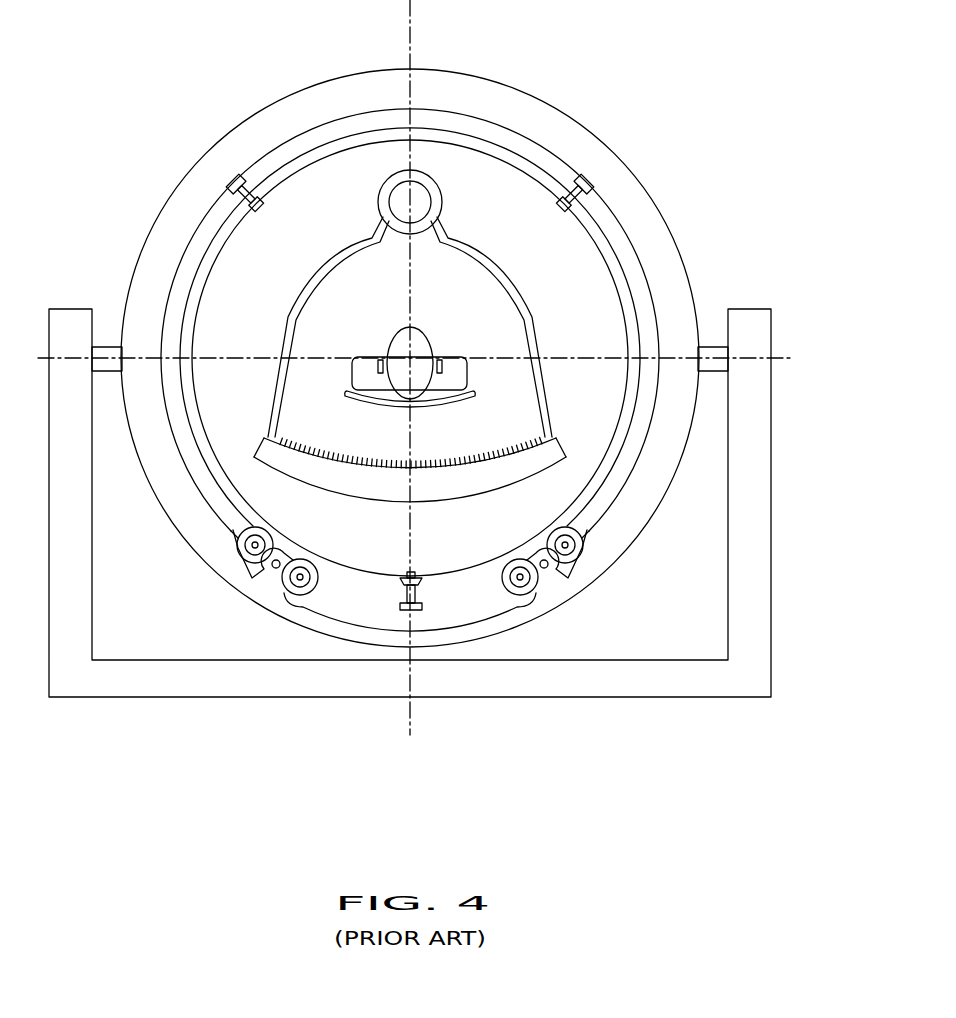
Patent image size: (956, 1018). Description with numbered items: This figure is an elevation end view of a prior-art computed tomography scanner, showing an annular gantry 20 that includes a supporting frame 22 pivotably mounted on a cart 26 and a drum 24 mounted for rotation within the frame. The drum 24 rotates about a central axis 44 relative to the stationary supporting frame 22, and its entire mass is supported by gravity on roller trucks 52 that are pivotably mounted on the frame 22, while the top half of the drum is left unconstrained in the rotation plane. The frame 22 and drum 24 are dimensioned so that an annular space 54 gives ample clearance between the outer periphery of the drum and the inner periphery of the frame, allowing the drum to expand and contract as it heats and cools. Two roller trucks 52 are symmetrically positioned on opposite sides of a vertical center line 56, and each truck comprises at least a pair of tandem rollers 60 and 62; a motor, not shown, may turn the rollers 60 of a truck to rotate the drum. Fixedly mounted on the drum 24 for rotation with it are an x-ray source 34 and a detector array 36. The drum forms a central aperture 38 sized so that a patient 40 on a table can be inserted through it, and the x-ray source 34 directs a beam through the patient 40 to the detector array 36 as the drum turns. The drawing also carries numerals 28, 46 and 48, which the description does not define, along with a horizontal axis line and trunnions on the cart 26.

The annular gantry 20 is at (136, 222).
The supporting frame 22 is at (566, 127).
The drum 24 is at (558, 274).
The cart 26 is at (70, 521).
The ring 28 is at (477, 143).
The x-ray source 34 is at (400, 204).
The detector array 36 is at (358, 455).
The central aperture 38 is at (334, 289).
The patient 40 is at (371, 350).
The central axis 44 is at (424, 350).
The trunnion 46 is at (103, 347).
The horizontal axis 48 is at (256, 357).
The roller trucks 52 is at (288, 597).
The annular space 54 is at (624, 257).
The vertical center line 56 is at (410, 40).
The tandem roller 60 is at (240, 548).
The tandem roller 62 is at (320, 592).